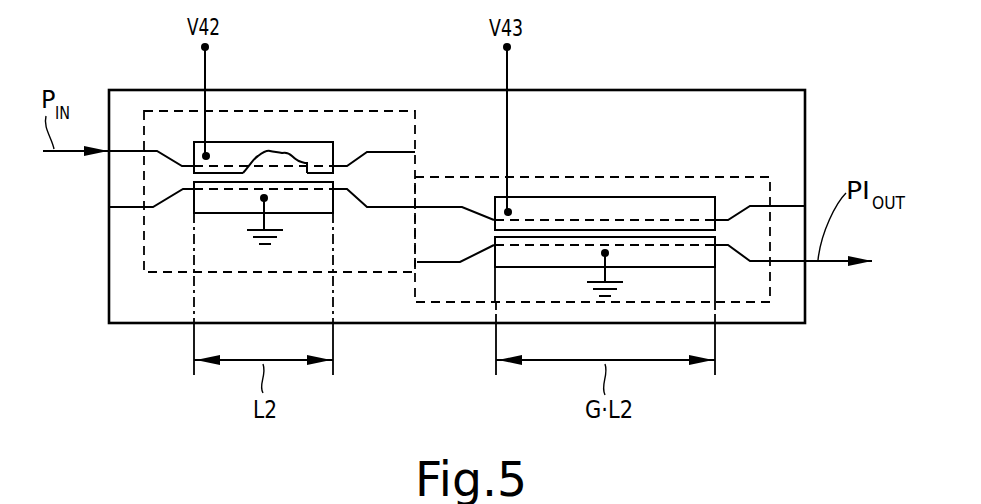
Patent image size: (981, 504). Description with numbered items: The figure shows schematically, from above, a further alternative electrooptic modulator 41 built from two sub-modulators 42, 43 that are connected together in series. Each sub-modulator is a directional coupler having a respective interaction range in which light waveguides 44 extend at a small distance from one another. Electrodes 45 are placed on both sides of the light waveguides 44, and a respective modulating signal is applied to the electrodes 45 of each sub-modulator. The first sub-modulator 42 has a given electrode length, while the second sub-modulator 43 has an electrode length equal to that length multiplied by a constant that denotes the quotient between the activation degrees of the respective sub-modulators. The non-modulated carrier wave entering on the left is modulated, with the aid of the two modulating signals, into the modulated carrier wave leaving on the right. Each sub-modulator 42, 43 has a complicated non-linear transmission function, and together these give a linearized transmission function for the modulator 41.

The electrooptic modulator 41 is at (745, 84).
The sub-modulator 42 is at (384, 100).
The sub-modulator 43 is at (746, 316).
The light waveguides 44 is at (283, 147).
The electrodes 45 is at (244, 151).